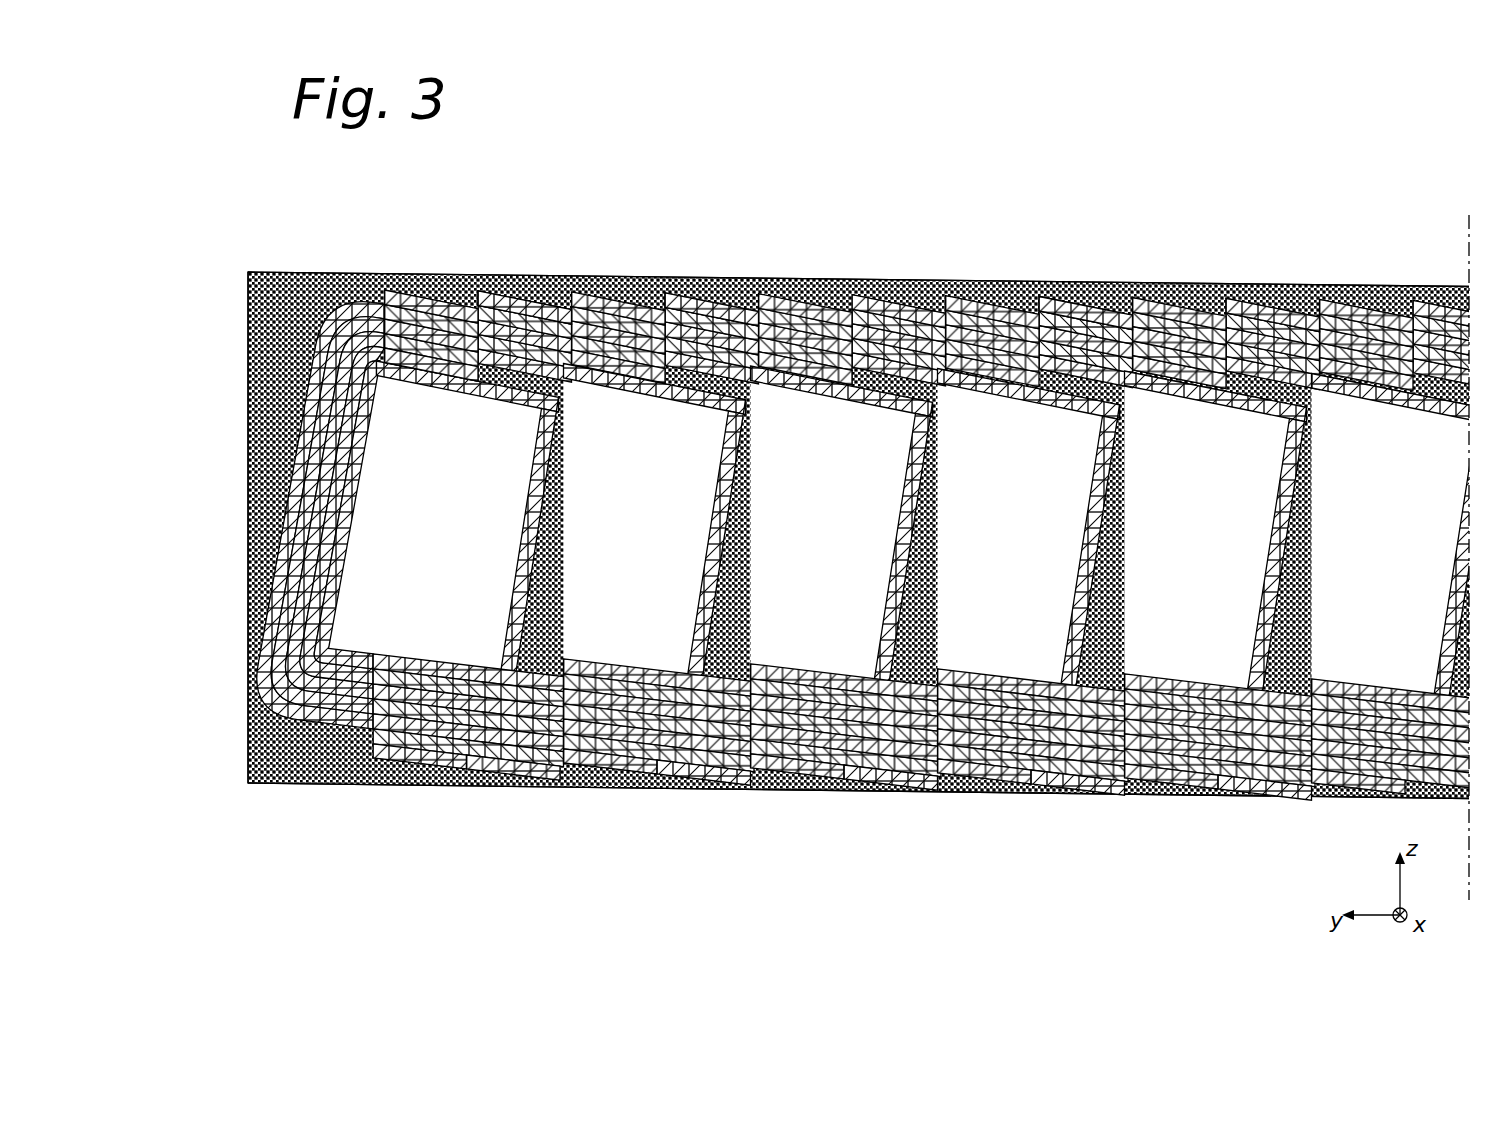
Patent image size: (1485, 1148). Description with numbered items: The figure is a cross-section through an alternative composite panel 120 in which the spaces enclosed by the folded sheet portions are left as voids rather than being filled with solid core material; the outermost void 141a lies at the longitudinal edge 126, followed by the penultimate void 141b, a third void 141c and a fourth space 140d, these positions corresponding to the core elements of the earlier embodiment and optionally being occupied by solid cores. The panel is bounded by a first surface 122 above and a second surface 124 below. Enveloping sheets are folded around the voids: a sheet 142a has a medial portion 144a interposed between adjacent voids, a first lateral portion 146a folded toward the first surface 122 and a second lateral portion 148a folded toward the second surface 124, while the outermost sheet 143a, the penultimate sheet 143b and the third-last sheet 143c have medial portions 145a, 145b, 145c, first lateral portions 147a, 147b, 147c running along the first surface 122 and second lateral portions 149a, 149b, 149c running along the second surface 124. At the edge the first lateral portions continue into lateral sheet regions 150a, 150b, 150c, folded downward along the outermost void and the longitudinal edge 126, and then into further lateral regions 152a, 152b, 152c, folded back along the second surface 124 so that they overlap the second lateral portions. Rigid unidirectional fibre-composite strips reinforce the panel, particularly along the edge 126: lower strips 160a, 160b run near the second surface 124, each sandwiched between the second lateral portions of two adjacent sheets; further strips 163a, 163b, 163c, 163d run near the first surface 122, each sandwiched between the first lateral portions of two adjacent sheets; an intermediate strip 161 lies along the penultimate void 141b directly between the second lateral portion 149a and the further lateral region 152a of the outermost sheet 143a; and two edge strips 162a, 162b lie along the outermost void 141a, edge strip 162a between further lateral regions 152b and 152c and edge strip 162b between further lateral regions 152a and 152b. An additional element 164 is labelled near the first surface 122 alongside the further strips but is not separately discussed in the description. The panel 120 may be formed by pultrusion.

The composite panel 120 is at (220, 296).
The first surface 122 is at (1202, 268).
The second surface 124 is at (833, 806).
The longitudinal edge 126 is at (233, 608).
The core element 140d is at (1030, 595).
The outermost void 141a is at (385, 558).
The penultimate void 141b is at (630, 625).
The void 141c is at (795, 600).
The sheet 142a is at (960, 388).
The outermost sheet 143a is at (428, 366).
The penultimate enveloping sheet 143b is at (608, 368).
The third last enveloping sheet 143c is at (812, 370).
The medial portion 144a is at (1095, 528).
The medial portion 145a is at (522, 510).
The medial portion 145b is at (712, 512).
The medial portion 145c is at (905, 522).
The first lateral portion 146a is at (1045, 388).
The first lateral portion 147a is at (386, 322).
The first lateral portion 147b is at (690, 332).
The first lateral portion 147c is at (872, 336).
The second lateral portion 148a is at (1085, 695).
The second lateral portion 149a is at (567, 738).
The second lateral portion 149b is at (812, 735).
The second lateral portion 149c is at (985, 700).
The lateral sheet region 150a is at (352, 428).
The lateral sheet region 150b is at (333, 458).
The lateral sheet region 150c is at (305, 500).
The further lateral region 152a is at (367, 760).
The further lateral region 152b is at (316, 742).
The further lateral region 152c is at (262, 760).
The strip 160a is at (693, 720).
The strip 160b is at (920, 715).
The intermediate strip 161 is at (520, 705).
The edge strip 162a is at (412, 735).
The edge strip 162b is at (462, 722).
The further strip 163a is at (472, 336).
The further strip 163b is at (545, 338).
The further strip 163c is at (735, 333).
The further strip 163d is at (1110, 390).
The top tile 164 is at (1283, 297).